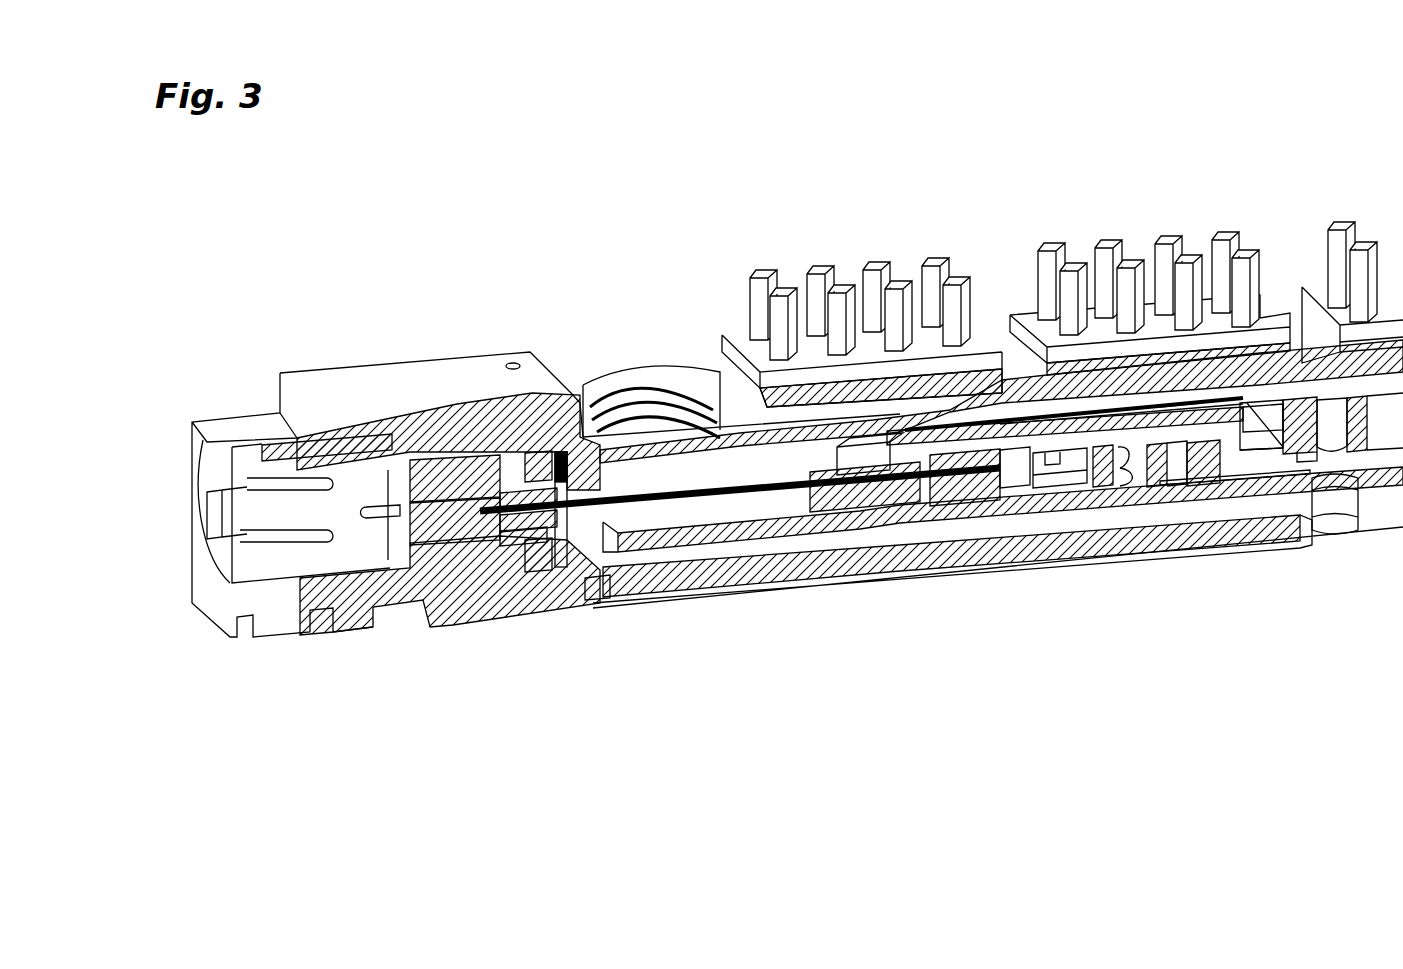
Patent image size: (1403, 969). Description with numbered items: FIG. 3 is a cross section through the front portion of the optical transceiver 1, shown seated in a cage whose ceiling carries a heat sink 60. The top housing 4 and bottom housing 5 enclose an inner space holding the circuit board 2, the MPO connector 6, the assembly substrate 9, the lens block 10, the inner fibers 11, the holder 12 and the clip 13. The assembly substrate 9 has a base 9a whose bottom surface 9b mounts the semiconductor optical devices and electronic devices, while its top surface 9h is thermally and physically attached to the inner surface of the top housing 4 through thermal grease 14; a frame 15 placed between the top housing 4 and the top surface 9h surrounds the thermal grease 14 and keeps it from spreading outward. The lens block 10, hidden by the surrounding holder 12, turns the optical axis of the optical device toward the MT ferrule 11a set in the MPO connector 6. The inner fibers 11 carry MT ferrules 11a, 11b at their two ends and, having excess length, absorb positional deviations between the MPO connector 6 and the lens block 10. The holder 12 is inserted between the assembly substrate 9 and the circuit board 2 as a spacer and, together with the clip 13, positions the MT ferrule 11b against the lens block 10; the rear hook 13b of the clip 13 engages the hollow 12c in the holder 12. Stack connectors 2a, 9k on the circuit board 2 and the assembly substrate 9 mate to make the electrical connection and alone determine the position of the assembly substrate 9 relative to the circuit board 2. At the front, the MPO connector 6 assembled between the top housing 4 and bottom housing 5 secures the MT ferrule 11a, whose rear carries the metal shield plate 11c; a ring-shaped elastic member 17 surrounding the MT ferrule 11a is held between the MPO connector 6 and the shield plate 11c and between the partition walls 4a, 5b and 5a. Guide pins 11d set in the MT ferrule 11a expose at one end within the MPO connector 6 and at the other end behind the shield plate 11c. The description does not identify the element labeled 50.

The optical transceiver 1 is at (360, 296).
The circuit board 2 is at (785, 542).
The stack connector 2a is at (1198, 523).
The top housing 4 is at (675, 430).
The partition wall 4a is at (513, 450).
The bottom housing 5 is at (668, 580).
The partition wall 5a is at (600, 590).
The partition wall 5b is at (513, 560).
The MPO connector 6 is at (217, 583).
The assembly substrate 9 is at (1249, 444).
The base 9a is at (1200, 477).
The bottom surface 9b is at (1097, 470).
The top surface 9h is at (1187, 427).
The stack connector 9k is at (1183, 405).
The lens block 10 is at (1063, 473).
The inner fibers 11 is at (717, 513).
The MT ferrule 11a is at (537, 487).
The MT ferrule 11b is at (962, 495).
The shield plate 11c is at (567, 560).
The guide pins 11d is at (372, 520).
The holder 12 is at (1113, 473).
The hollow 12c is at (1143, 440).
The clip 13 is at (1020, 507).
The rear hook 13b is at (1147, 493).
The thermal grease 14 is at (1022, 416).
The frame 15 is at (947, 427).
The elastic member 17 is at (540, 580).
The first electrical connector 50 is at (720, 387).
The heat sink 60 is at (1010, 315).